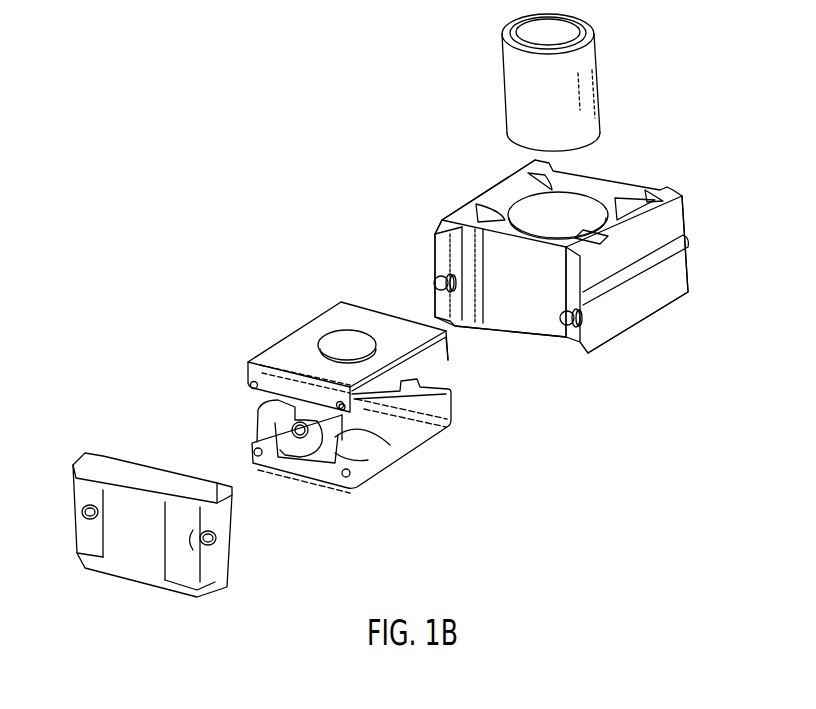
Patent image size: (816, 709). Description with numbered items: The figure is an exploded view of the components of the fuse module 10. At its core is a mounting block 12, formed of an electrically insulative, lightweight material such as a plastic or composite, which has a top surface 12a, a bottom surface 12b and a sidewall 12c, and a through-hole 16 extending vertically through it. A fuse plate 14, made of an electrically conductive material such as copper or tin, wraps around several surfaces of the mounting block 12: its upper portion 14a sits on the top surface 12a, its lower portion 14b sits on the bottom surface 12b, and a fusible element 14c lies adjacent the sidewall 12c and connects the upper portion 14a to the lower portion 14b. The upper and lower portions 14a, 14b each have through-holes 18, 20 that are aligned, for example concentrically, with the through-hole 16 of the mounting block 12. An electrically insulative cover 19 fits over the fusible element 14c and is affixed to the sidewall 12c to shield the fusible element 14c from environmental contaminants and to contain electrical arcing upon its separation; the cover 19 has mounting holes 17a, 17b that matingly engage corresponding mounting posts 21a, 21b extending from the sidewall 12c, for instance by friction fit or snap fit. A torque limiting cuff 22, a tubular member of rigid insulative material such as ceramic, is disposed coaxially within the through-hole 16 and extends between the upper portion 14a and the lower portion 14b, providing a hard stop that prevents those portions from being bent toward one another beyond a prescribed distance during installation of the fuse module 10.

The fuse module 10 is at (268, 193).
The mounting block 12 is at (460, 216).
The top surface 12a is at (461, 214).
The bottom surface 12b is at (608, 330).
The sidewall 12c is at (520, 312).
The fuse plate 14 is at (326, 386).
The upper portion 14a is at (340, 303).
The lower portion 14b is at (368, 470).
The fusible element 14c is at (278, 408).
The through-hole 16 is at (533, 209).
The mounting hole 17a is at (83, 512).
The mounting hole 17b is at (217, 539).
The through-hole 18 is at (336, 348).
The cover 19 is at (156, 539).
The through-hole 20 is at (383, 445).
The mounting post 21a is at (436, 283).
The mounting post 21b is at (566, 322).
The torque limiting cuff 22 is at (516, 97).